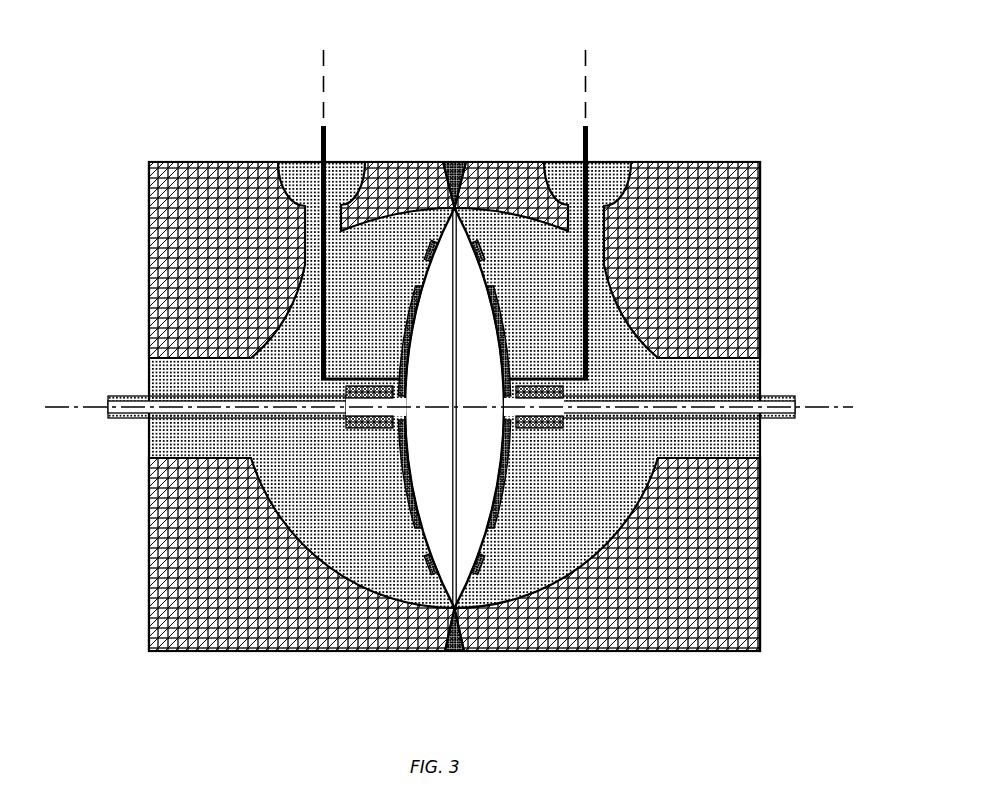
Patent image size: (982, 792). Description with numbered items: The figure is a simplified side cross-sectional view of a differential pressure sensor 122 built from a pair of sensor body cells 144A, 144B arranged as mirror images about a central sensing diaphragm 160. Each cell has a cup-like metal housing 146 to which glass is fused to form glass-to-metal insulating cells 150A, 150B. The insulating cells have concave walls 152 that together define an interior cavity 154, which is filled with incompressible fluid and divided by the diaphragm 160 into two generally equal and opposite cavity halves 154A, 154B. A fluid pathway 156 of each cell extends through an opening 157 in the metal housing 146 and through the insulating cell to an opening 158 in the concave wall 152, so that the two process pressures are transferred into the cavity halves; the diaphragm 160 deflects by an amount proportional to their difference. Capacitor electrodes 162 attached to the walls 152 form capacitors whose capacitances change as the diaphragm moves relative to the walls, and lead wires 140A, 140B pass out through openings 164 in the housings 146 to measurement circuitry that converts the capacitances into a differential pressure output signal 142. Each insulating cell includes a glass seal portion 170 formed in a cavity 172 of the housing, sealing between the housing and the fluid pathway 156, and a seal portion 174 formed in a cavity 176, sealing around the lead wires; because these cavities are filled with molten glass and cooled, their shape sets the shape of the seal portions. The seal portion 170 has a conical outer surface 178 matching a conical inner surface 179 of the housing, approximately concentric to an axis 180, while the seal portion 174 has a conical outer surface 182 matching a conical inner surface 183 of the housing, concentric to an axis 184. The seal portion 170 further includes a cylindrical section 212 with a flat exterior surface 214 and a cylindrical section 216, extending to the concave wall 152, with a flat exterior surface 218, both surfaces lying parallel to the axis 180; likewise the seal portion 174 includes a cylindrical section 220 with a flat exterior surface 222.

The differential pressure sensor 122 is at (128, 90).
The differential pressure output signal 142 is at (745, 290).
The metal housing 146 is at (150, 536).
The sensor body cell 144A is at (162, 641).
The sensor body cell 144B is at (731, 641).
The insulating cell 150A is at (277, 480).
The insulating cell 150B is at (612, 480).
The concave wall 152 is at (413, 537).
The interior cavity 154 is at (447, 199).
The cavity half 154A is at (398, 335).
The cavity half 154B is at (493, 335).
The fluid pathway 156 is at (178, 395).
The opening 157 is at (116, 378).
The opening 158 is at (385, 403).
The sensing diaphragm 160 is at (447, 374).
The capacitor electrode 162 is at (400, 290).
The opening 164 is at (327, 148).
The glass seal portion 170 is at (335, 597).
The cavity 172 is at (288, 592).
The seal portion 174 is at (338, 168).
The cavity 176 is at (348, 172).
The conical outer surface 178 is at (290, 550).
The conical inner surface 179 is at (323, 551).
The axis 180 is at (60, 399).
The conical outer surface 182 is at (268, 173).
The conical inner surface 183 is at (288, 174).
The axis 184 is at (313, 72).
The cylindrical section 212 is at (158, 434).
The flat exterior surface 214 is at (190, 345).
The cylindrical section 216 is at (427, 603).
The flat exterior surface 218 is at (417, 614).
The cylindrical section 220 is at (297, 228).
The flat exterior surface 222 is at (293, 205).
The lead wire 140A is at (320, 312).
The lead wire 140B is at (573, 312).